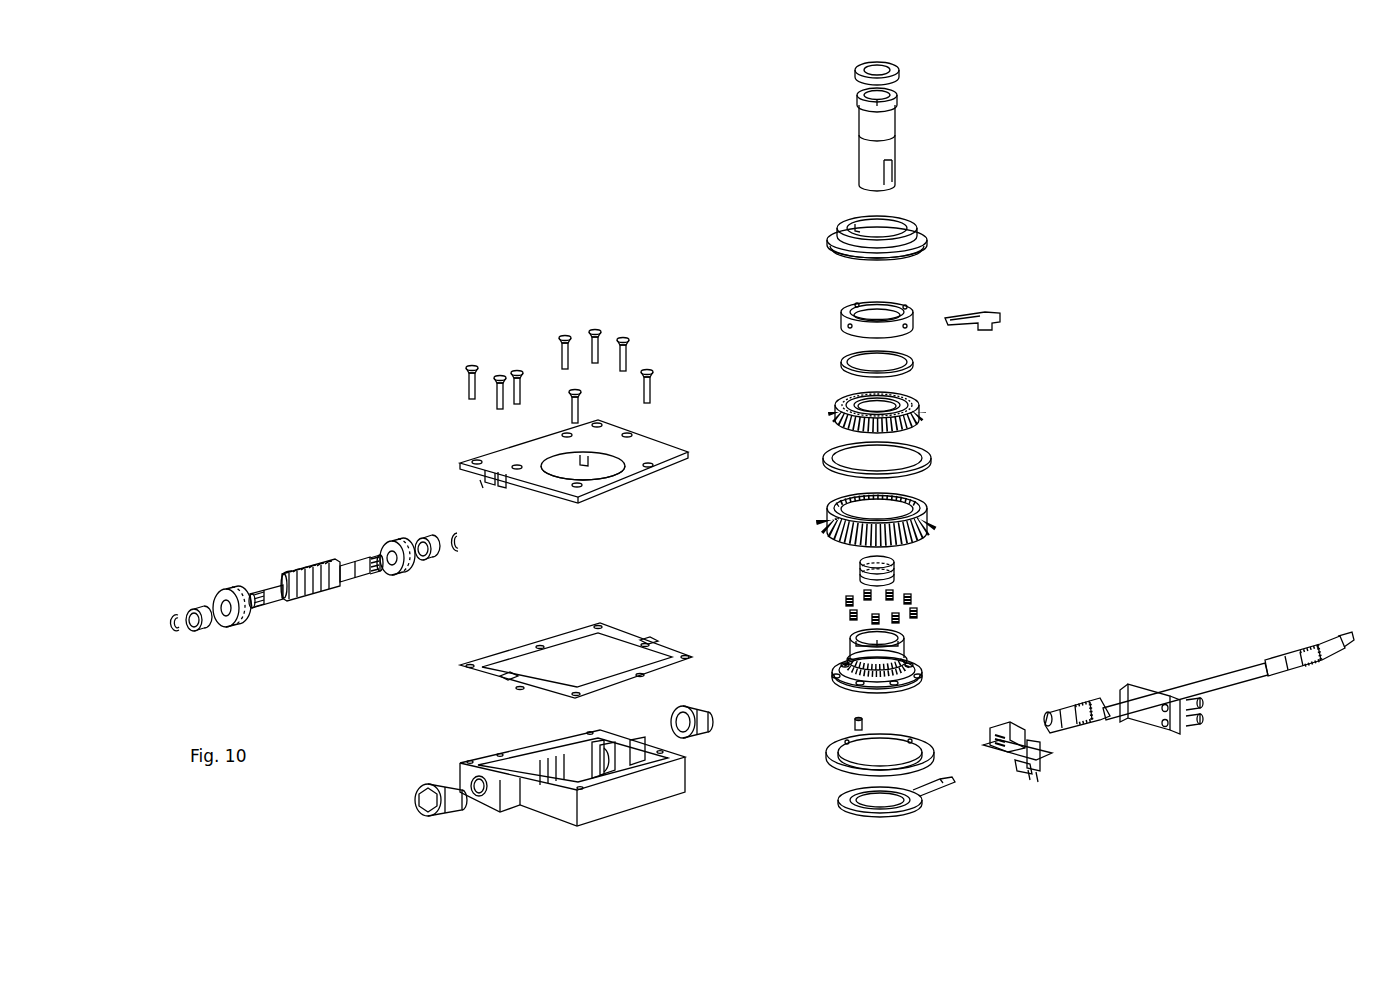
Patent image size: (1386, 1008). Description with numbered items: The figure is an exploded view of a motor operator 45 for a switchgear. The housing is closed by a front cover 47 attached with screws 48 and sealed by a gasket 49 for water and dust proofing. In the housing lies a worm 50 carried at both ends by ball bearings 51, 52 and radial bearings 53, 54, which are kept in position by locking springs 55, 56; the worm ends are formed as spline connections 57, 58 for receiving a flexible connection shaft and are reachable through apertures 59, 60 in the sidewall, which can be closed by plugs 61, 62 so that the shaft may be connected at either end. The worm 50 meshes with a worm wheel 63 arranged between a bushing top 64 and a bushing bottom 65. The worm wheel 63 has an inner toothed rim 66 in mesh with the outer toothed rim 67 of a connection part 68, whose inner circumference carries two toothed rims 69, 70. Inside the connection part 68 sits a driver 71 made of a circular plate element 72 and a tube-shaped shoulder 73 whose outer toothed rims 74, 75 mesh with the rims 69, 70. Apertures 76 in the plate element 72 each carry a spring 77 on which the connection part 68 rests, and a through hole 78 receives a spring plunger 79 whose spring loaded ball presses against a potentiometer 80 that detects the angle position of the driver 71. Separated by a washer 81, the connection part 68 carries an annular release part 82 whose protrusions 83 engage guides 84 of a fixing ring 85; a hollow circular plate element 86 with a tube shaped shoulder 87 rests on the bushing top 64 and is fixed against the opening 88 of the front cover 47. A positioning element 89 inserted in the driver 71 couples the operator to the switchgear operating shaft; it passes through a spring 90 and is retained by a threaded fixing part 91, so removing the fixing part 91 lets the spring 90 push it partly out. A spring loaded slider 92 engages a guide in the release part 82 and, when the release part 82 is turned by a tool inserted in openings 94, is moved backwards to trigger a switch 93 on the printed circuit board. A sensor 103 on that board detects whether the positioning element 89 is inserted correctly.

The motor operator 45 is at (397, 158).
The front cover 47 is at (652, 445).
The screws 48 is at (464, 368).
The gasket 49 is at (625, 635).
The worm 50 is at (315, 595).
The ball bearing 51 is at (226, 598).
The ball bearing 52 is at (388, 548).
The radial bearing 53 is at (192, 610).
The radial bearing 54 is at (428, 540).
The locking spring 55 is at (170, 625).
The locking spring 56 is at (452, 550).
The spline connection 57 is at (256, 608).
The spline connection 58 is at (380, 572).
The aperture 59 is at (470, 760).
The aperture 60 is at (605, 740).
The plug 61 is at (420, 812).
The plug 62 is at (633, 795).
The worm wheel 63 is at (928, 520).
The bushing top 64 is at (932, 462).
The bushing bottom 65 is at (835, 762).
The toothed rim 66 is at (838, 502).
The outer toothed rim 67 is at (838, 418).
The connection part 68 is at (700, 735).
The toothed rim 69 is at (855, 398).
The toothed rim 70 is at (905, 398).
The driver 71 is at (943, 655).
The circular plate element 72 is at (920, 685).
The tube-shaped shoulder 73 is at (905, 643).
The toothed rim 74 is at (858, 648).
The toothed rim 75 is at (848, 658).
The apertures 76 is at (838, 676).
The spring 77 is at (842, 605).
The through hole 78 is at (920, 675).
The spring plunger 79 is at (850, 724).
The potentiometer 80 is at (845, 806).
The washer 81 is at (915, 365).
The release part 82 is at (828, 315).
The protrusions 83 is at (848, 328).
The guides 84 is at (845, 235).
The fixing ring 85 is at (945, 248).
The hollow circular plate element 86 is at (925, 237).
The tube shaped shoulder 87 is at (830, 250).
The opening 88 is at (598, 468).
The positioning element 89 is at (888, 122).
The spring 90 is at (897, 571).
The fixing part 91 is at (900, 72).
The spring loaded slider 92 is at (985, 312).
The switch 93 is at (1050, 760).
The openings 94 is at (858, 305).
The sensor 103 is at (1025, 775).